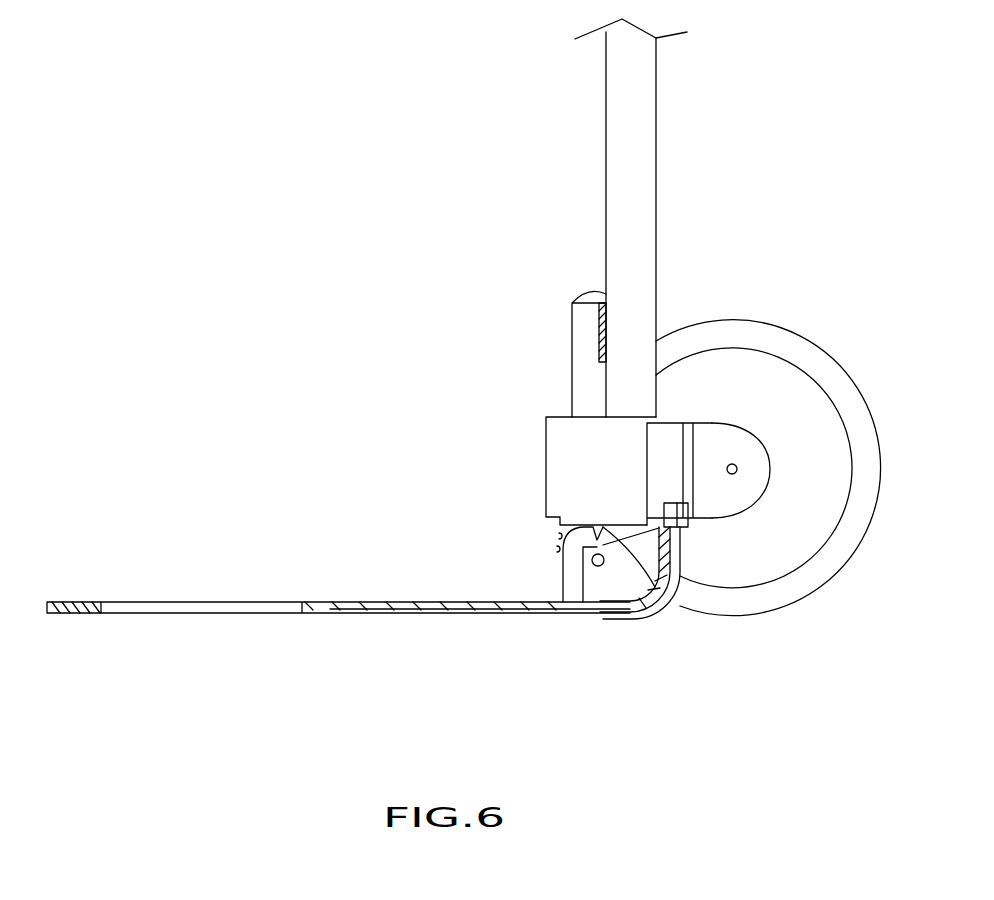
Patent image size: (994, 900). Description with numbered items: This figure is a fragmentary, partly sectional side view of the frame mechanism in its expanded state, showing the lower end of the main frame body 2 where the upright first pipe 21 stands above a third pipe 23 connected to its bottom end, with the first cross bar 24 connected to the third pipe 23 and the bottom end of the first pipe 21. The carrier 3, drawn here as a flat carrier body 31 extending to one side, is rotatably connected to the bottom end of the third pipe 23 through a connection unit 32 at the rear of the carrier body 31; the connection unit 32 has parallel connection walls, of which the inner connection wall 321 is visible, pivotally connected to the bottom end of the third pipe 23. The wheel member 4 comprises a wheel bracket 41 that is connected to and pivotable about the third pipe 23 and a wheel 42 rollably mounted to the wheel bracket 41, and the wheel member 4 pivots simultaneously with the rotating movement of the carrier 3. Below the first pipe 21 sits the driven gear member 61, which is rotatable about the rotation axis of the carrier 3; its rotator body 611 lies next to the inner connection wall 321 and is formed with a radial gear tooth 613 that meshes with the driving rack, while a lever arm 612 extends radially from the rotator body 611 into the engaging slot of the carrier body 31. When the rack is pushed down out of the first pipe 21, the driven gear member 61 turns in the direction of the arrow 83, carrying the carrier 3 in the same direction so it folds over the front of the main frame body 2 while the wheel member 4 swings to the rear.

The main frame body 2 is at (600, 218).
The first pipe 21 is at (630, 173).
The third pipe 23 is at (590, 320).
The first cross bar 24 is at (603, 348).
The wheel member 4 is at (682, 412).
The wheel bracket 41 is at (587, 463).
The wheel 42 is at (793, 400).
The arrow 83 is at (252, 485).
The carrier 3 is at (338, 661).
The carrier body 31 is at (247, 615).
The connection unit 32 is at (535, 558).
The inner connection wall 321 is at (575, 570).
The driven gear member 61 is at (651, 614).
The rotator body 611 is at (597, 570).
The lever arm 612 is at (598, 610).
The radial gear tooth 613 is at (670, 603).